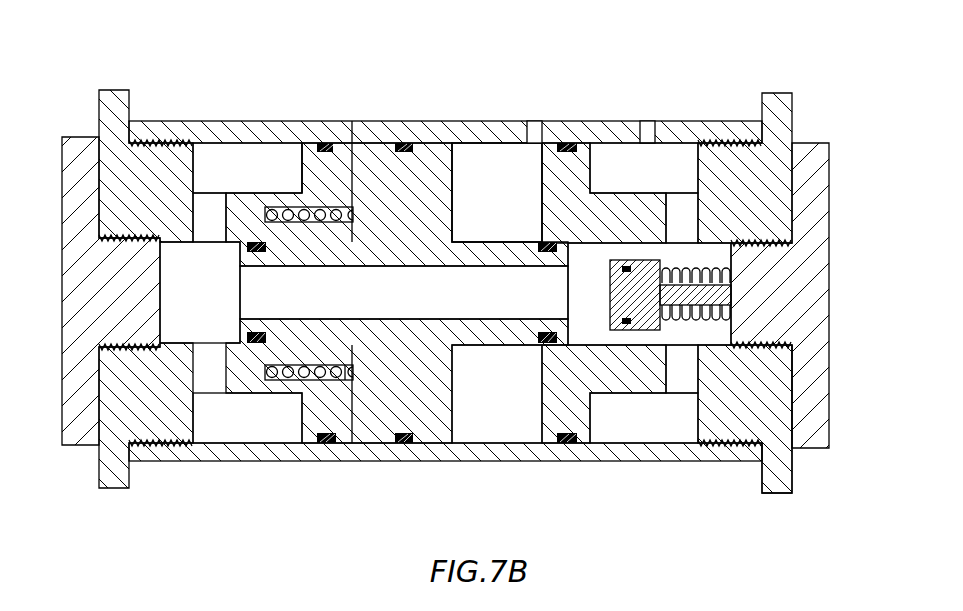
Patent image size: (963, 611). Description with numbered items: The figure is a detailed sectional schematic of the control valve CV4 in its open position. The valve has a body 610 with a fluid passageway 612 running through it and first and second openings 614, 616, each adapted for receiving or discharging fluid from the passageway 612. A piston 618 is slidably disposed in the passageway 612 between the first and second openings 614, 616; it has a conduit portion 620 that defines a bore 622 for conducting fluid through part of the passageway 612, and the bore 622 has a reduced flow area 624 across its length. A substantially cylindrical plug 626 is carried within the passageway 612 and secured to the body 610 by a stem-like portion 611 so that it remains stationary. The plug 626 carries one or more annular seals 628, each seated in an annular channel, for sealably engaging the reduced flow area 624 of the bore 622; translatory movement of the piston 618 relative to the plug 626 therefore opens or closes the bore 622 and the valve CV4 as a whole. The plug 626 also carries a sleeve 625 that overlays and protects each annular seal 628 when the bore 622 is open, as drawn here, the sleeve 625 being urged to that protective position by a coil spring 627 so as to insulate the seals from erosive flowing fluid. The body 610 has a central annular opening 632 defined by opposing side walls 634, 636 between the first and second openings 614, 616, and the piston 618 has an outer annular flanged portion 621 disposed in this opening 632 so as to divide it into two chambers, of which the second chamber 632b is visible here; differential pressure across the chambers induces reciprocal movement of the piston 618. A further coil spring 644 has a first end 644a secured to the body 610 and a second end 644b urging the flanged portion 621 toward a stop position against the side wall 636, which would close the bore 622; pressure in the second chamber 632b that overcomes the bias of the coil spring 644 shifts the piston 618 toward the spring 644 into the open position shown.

The body 610 is at (82, 155).
The stem-like portion 611 is at (715, 295).
The fluid passageway 612 is at (181, 305).
The first opening 614 is at (208, 205).
The second opening 616 is at (679, 200).
The piston 618 is at (457, 347).
The conduit portion 620 is at (473, 257).
The outer annular flanged portion 621 is at (380, 433).
The bore 622 is at (547, 319).
The reduced flow area 624 is at (370, 268).
The sleeve 625 is at (660, 262).
The plug 626 is at (610, 268).
The coil spring 627 is at (717, 317).
The annular seal 628 is at (628, 266).
The central annular opening 632 is at (469, 160).
The second chamber 632b is at (503, 190).
The side wall 634 is at (352, 173).
The side wall 636 is at (530, 150).
The coil spring 644 is at (280, 200).
The first end 644a is at (263, 381).
The second end 644b is at (356, 373).
The control valve CV4 is at (790, 517).